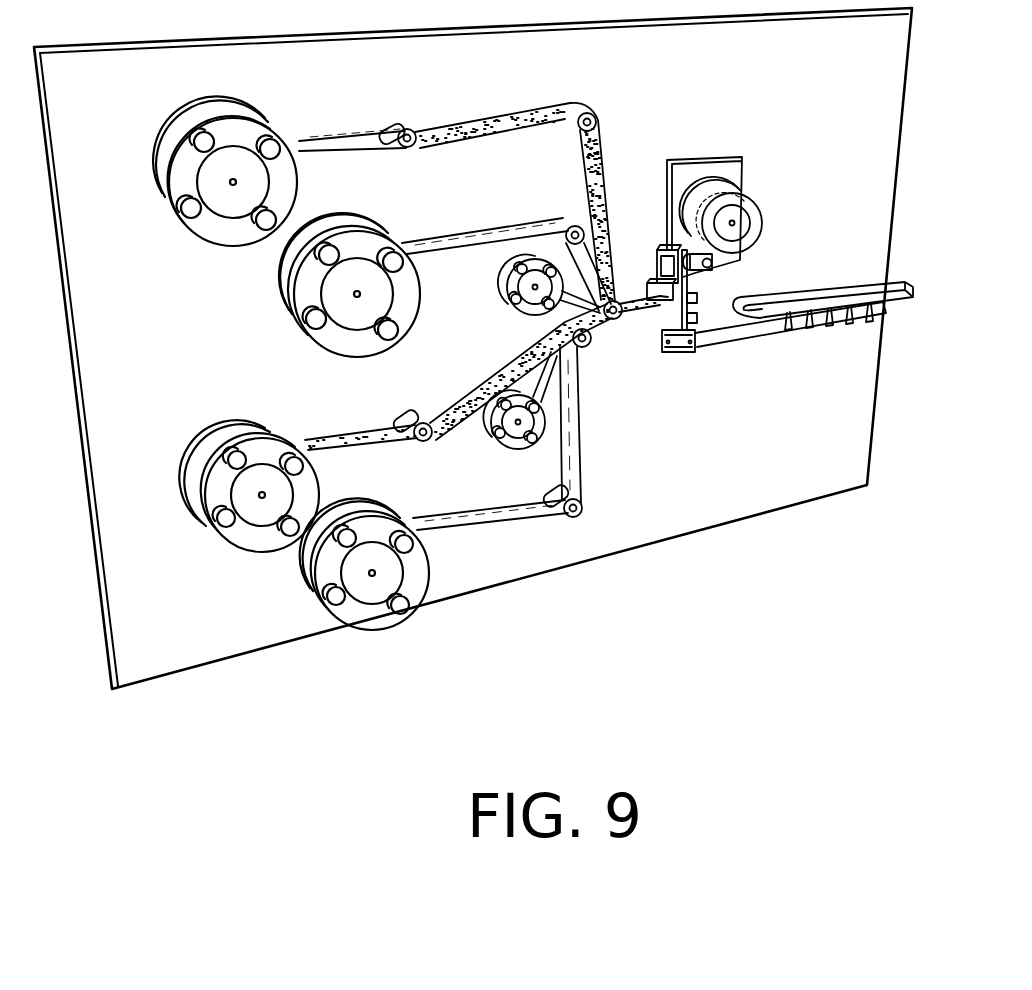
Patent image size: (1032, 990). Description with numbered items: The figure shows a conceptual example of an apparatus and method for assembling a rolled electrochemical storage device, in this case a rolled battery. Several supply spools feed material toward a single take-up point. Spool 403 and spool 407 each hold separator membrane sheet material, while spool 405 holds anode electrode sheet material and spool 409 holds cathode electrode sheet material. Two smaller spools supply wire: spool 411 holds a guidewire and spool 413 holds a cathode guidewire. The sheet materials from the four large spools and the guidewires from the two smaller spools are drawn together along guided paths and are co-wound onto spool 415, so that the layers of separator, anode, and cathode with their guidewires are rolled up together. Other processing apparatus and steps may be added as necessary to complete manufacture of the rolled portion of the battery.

The spool 403 is at (238, 153).
The spool 405 is at (325, 292).
The spool 407 is at (237, 497).
The spool 409 is at (350, 583).
The spool 411 is at (527, 289).
The spool 413 is at (516, 424).
The spool 415 is at (740, 220).